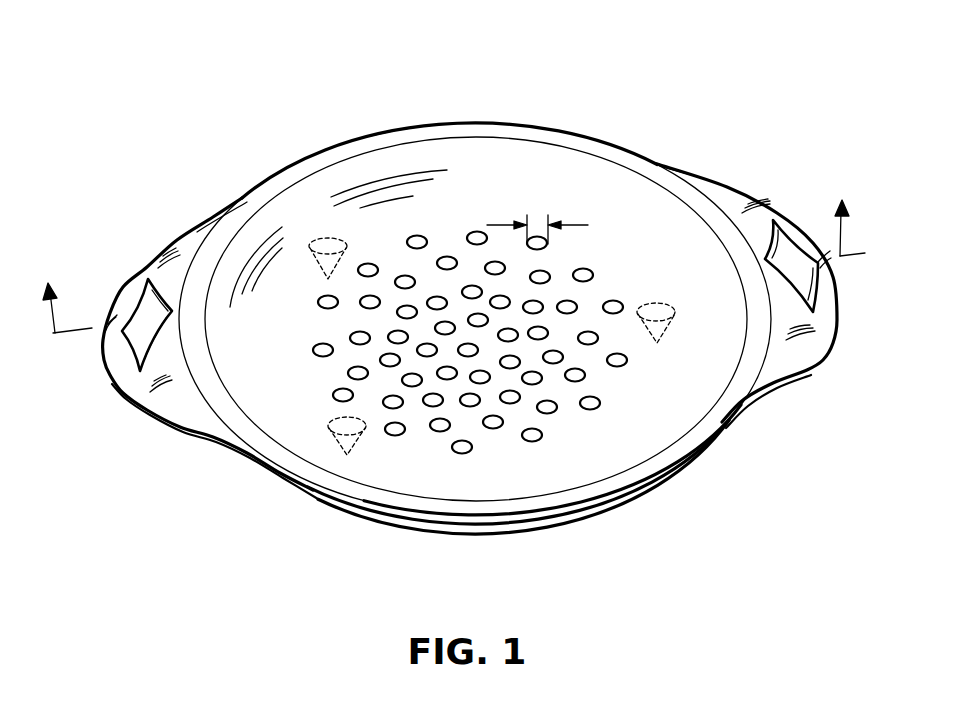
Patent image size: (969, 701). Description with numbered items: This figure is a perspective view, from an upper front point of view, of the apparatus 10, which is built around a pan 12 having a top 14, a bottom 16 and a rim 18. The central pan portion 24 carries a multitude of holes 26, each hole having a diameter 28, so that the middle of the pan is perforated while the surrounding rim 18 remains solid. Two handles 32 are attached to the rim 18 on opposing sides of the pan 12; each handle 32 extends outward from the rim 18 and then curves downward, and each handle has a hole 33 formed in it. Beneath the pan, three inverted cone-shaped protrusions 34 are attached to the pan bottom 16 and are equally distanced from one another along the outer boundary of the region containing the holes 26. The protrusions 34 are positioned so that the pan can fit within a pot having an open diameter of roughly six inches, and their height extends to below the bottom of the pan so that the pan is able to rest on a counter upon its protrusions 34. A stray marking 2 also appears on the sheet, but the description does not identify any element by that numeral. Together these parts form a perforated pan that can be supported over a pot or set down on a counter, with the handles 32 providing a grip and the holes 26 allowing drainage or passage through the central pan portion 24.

The apparatus 10 is at (222, 92).
The pan 12 is at (486, 148).
The top 14 is at (582, 140).
The bottom 16 is at (535, 525).
The rim 18 is at (412, 133).
The central pan portion 24 is at (357, 188).
The holes 26 is at (592, 276).
The diameter 28 is at (535, 236).
The handles 32 is at (180, 247).
The hole 33 is at (143, 317).
The inverted cone-shaped protrusions 34 is at (326, 240).
The section line 2 is at (461, 287).